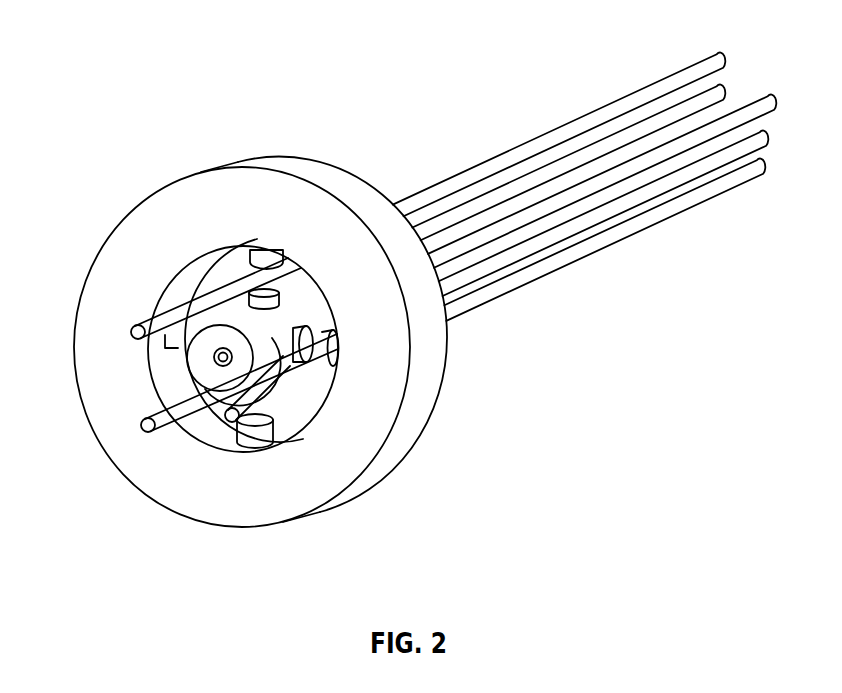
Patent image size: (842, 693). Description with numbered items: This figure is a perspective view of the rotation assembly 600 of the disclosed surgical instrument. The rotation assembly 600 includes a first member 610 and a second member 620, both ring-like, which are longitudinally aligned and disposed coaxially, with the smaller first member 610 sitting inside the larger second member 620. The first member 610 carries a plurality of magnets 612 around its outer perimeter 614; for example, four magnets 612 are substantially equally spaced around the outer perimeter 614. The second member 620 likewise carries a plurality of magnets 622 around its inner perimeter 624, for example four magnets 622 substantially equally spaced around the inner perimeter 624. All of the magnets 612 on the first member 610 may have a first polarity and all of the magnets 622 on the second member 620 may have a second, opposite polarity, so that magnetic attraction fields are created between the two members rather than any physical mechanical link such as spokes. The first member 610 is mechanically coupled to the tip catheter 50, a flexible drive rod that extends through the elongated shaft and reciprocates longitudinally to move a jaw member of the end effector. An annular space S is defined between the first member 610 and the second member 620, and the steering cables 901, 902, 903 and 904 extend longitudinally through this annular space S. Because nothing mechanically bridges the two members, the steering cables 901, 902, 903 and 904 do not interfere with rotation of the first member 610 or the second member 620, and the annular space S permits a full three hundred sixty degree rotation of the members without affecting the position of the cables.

The rotation assembly 600 is at (385, 54).
The second member 620 is at (256, 504).
The first member 610 is at (205, 393).
The magnets 612 is at (248, 448).
The outer perimeter 614 is at (227, 422).
The magnets 622 is at (172, 337).
The inner perimeter 624 is at (168, 369).
The tip catheter 50 is at (580, 192).
The steering cable 901 is at (605, 118).
The steering cable 902 is at (600, 155).
The steering cable 903 is at (548, 237).
The steering cable 904 is at (508, 283).
The annular space S is at (222, 272).